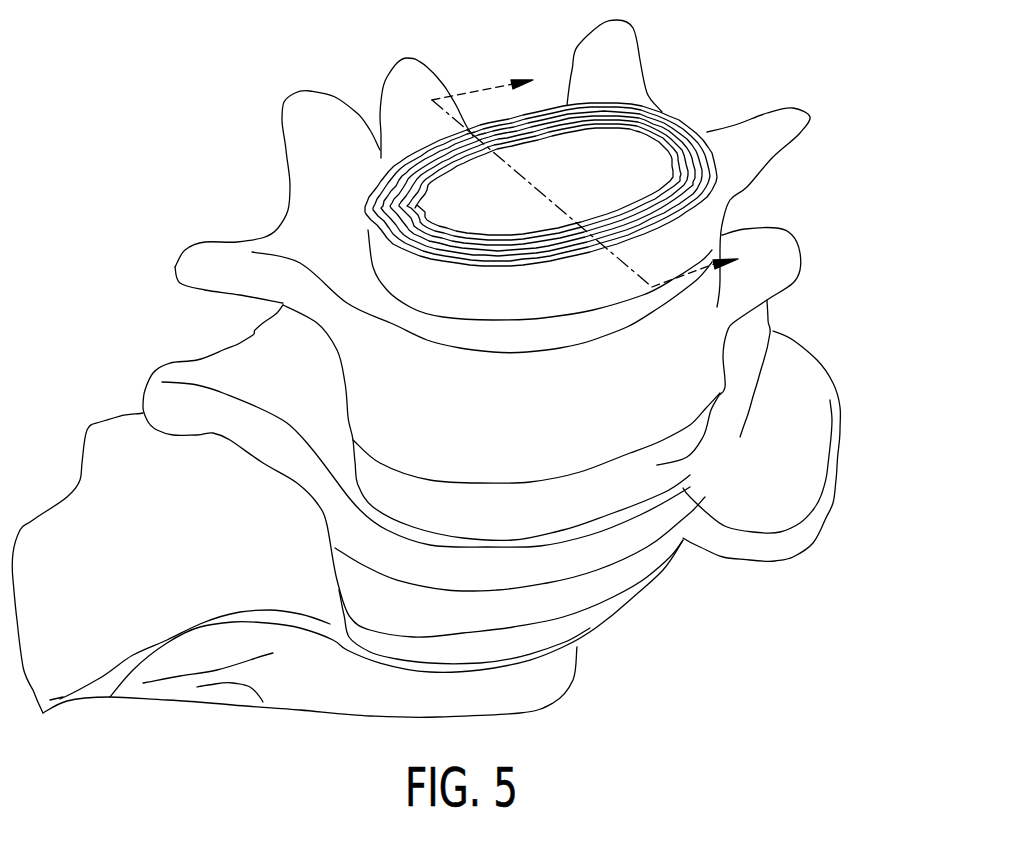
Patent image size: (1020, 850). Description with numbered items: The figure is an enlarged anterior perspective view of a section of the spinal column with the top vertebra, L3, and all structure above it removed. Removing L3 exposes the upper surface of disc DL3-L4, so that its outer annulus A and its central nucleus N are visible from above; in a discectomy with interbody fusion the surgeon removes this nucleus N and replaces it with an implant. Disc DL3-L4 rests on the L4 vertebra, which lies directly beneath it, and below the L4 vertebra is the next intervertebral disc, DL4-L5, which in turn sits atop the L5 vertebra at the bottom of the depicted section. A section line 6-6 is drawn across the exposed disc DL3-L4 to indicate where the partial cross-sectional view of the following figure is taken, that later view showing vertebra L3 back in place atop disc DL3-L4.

The annulus A is at (657, 130).
The nucleus N is at (437, 190).
The disc DL3-L4 is at (383, 255).
The line 6- 6 is at (597, 172).
The L4 vertebra L4 is at (683, 353).
The disc DL4-L5 is at (700, 450).
The L5 vertebra L5 is at (608, 568).